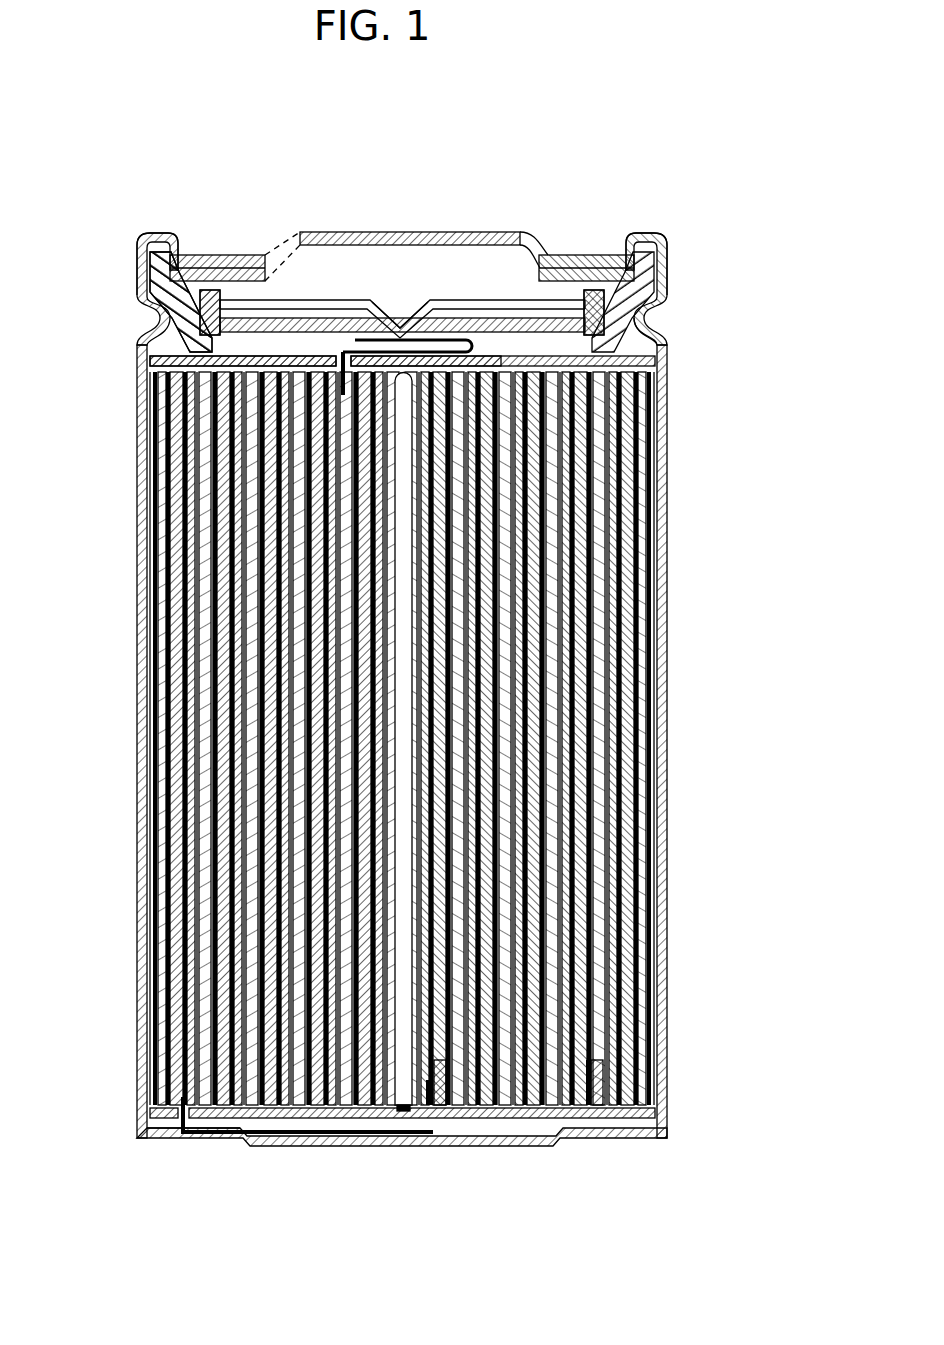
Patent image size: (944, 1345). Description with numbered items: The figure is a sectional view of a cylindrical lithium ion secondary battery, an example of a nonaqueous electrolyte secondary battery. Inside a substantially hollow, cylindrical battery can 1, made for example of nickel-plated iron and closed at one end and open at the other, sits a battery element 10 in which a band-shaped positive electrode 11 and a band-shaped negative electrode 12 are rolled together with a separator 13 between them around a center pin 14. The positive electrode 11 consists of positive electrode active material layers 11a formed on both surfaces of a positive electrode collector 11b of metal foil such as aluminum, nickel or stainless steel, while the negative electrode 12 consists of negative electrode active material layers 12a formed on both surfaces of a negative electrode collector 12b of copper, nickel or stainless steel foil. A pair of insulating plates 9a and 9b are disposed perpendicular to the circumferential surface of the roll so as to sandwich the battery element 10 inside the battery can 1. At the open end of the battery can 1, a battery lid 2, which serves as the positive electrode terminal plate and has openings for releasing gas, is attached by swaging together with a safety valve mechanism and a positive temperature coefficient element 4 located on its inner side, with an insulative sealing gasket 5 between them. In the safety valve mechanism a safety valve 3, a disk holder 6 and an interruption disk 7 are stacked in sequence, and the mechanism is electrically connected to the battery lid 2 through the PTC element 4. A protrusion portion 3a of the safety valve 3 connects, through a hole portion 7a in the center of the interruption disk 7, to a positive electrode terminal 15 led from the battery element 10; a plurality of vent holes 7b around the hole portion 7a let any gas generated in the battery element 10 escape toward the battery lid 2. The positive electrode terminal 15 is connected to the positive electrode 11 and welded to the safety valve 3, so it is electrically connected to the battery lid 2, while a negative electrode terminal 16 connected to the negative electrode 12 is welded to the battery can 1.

The battery can 1 is at (667, 603).
The battery lid 2 is at (227, 255).
The safety valve 3 is at (475, 300).
The protrusion portion 3a is at (400, 324).
The positive temperature coefficient element 4 is at (187, 252).
The sealing gasket 5 is at (152, 238).
The disk holder 6 is at (138, 298).
The interruption disk 7 is at (640, 361).
The hole portion 7a is at (455, 360).
The vent holes 7b is at (262, 336).
The insulating plate 9a is at (655, 1110).
The insulating plate 9b is at (656, 342).
The battery element 10 is at (655, 907).
The positive electrode 11 is at (705, 1209).
The positive electrode active material layer 11a is at (580, 1105).
The positive electrode collector 11b is at (598, 1108).
The negative electrode 12 is at (523, 1209).
The negative electrode active material layer 12a is at (414, 1105).
The negative electrode collector 12b is at (440, 1110).
The separator 13 is at (232, 1140).
The center pin 14 is at (398, 1115).
The positive electrode terminal 15 is at (329, 340).
The negative electrode terminal 16 is at (183, 1132).